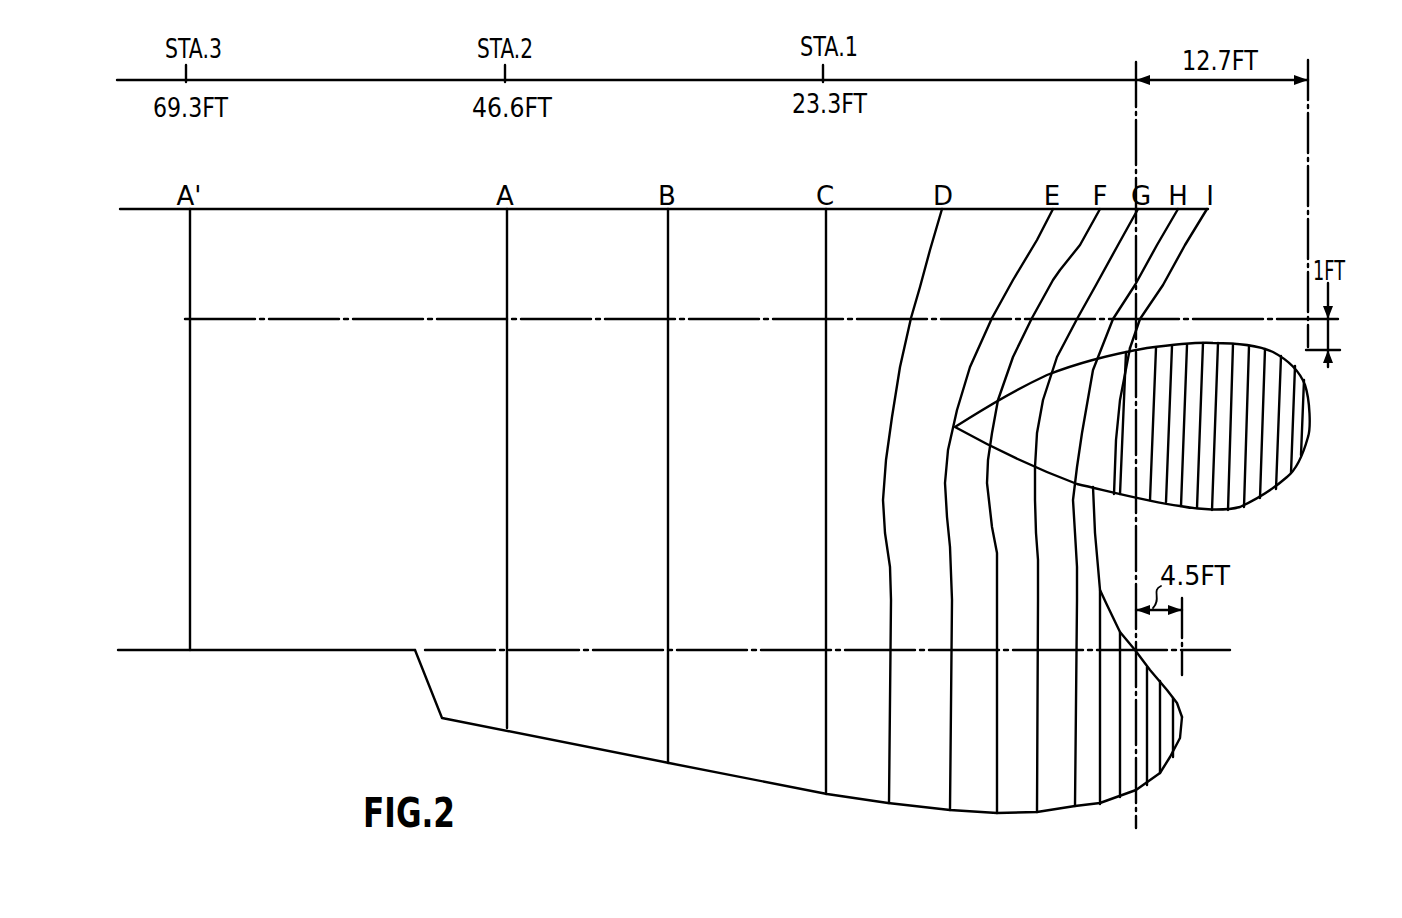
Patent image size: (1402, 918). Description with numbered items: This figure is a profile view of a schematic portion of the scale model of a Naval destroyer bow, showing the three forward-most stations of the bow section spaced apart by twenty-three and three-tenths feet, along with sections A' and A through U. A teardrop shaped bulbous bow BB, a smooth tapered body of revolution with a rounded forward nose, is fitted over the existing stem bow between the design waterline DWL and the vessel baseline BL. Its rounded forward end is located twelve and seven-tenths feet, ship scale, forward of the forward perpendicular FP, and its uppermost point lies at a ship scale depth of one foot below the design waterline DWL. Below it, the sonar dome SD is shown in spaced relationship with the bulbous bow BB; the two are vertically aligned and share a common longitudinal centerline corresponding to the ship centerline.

The bulbous bow BB is at (1267, 509).
The sonar dome SD is at (1146, 789).
The forward perpendicular FP is at (1136, 429).
The design waterline DWL is at (730, 318).
The baseline BL is at (674, 641).